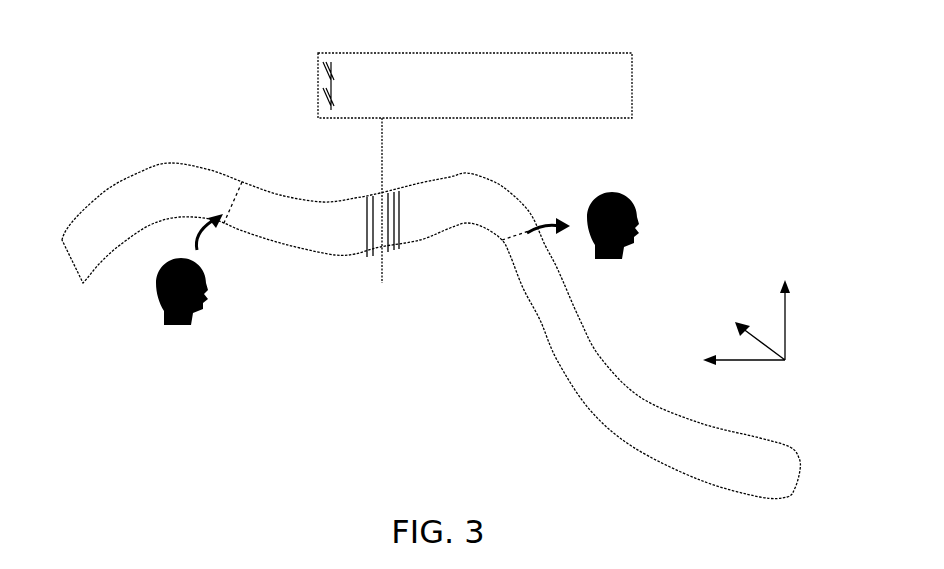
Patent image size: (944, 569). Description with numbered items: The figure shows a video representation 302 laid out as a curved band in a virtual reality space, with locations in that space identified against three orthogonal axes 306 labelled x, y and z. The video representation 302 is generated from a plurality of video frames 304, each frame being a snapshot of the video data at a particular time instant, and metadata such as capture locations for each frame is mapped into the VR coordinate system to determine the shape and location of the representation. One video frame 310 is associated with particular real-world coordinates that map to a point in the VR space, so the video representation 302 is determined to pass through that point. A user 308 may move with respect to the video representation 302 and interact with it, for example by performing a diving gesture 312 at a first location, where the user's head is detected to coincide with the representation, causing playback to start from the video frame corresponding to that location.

The video representation 302 is at (175, 163).
The plurality of video frames 304 is at (334, 53).
The three orthogonal axes 306 is at (765, 362).
The user 308 is at (158, 288).
The video frame 310 is at (387, 118).
The diving gesture 312 is at (197, 250).